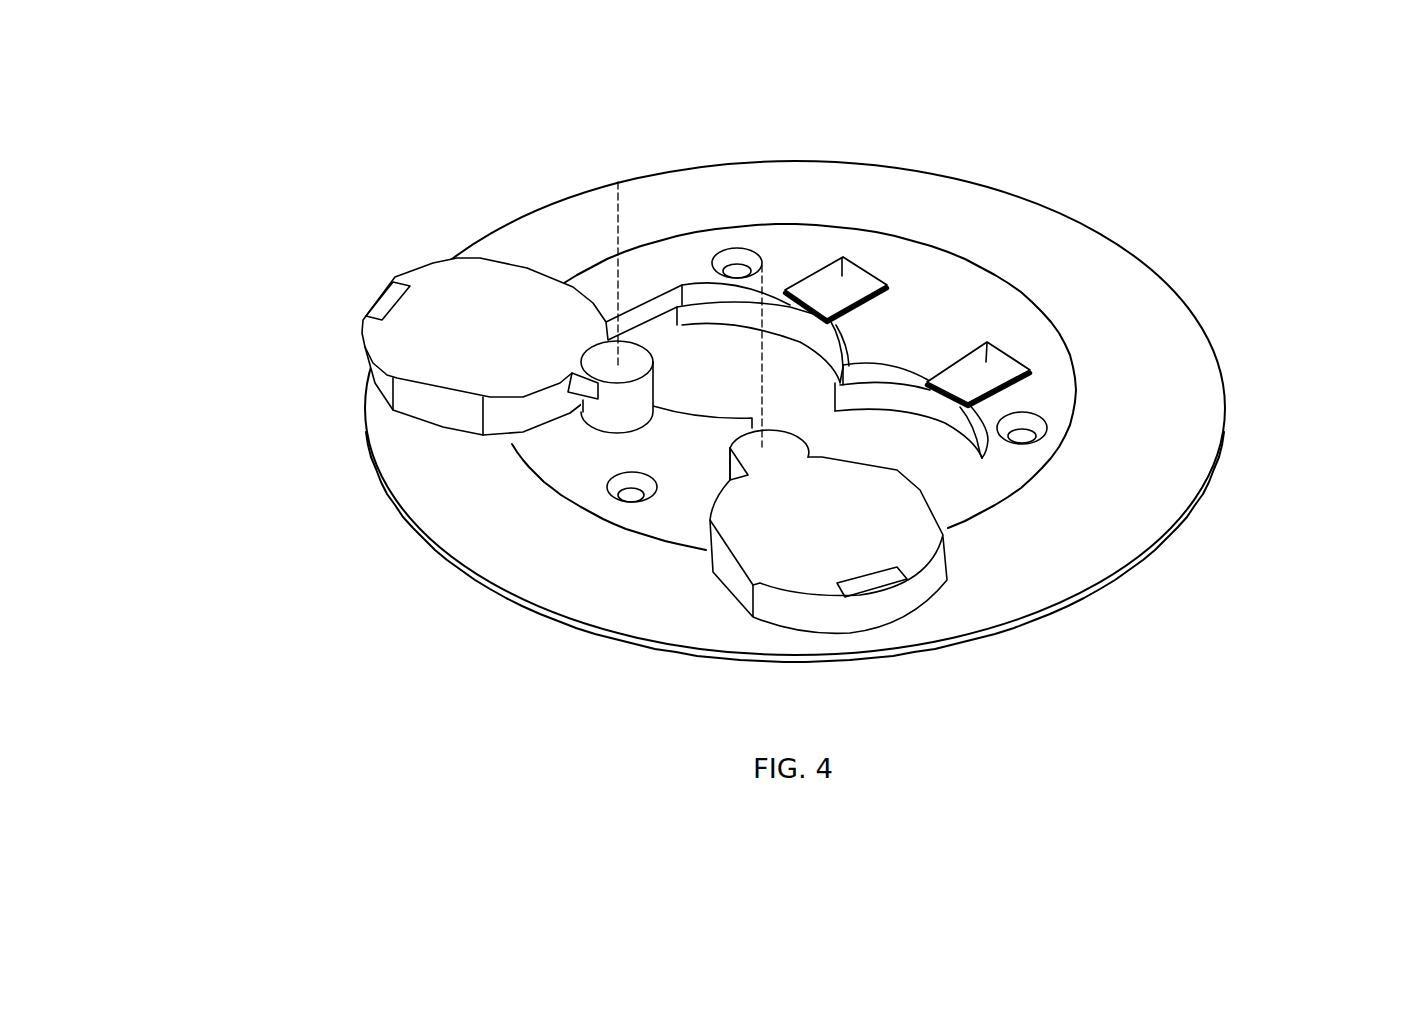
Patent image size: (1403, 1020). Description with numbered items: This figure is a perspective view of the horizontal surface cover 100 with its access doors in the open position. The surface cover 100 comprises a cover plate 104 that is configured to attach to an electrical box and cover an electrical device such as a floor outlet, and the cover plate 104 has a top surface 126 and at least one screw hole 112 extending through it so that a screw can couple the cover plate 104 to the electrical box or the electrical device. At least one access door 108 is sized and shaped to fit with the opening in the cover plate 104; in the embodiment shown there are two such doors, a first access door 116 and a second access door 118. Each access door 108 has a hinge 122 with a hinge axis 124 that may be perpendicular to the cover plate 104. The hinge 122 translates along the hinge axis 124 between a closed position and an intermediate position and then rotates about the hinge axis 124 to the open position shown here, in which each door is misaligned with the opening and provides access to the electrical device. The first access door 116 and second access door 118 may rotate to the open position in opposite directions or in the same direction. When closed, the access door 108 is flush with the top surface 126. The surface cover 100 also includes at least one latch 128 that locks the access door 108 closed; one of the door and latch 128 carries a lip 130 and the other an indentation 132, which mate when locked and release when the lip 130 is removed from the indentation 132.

The horizontal surface cover 100 is at (290, 193).
The cover plate 104 is at (1010, 310).
The access door 108 is at (808, 427).
The screw hole 112 is at (737, 268).
The first access door 116 is at (838, 522).
The second access door 118 is at (535, 320).
The hinge 122 is at (742, 447).
The hinge axis 124 is at (760, 335).
The top surface 126 is at (1065, 375).
The latch 128 is at (978, 367).
The lip 130 is at (962, 397).
The indentation 132 is at (380, 298).